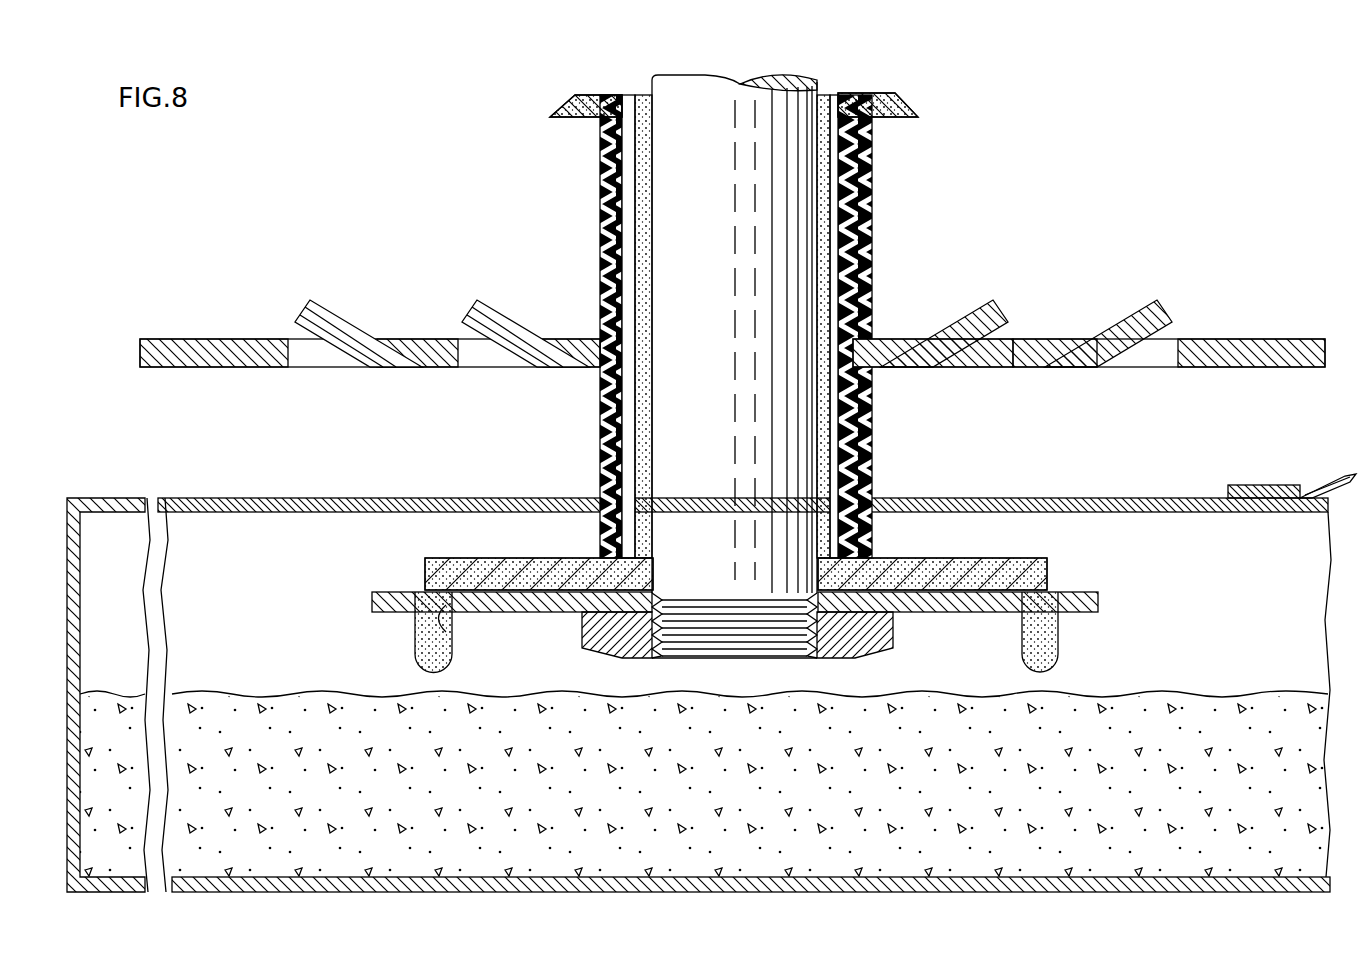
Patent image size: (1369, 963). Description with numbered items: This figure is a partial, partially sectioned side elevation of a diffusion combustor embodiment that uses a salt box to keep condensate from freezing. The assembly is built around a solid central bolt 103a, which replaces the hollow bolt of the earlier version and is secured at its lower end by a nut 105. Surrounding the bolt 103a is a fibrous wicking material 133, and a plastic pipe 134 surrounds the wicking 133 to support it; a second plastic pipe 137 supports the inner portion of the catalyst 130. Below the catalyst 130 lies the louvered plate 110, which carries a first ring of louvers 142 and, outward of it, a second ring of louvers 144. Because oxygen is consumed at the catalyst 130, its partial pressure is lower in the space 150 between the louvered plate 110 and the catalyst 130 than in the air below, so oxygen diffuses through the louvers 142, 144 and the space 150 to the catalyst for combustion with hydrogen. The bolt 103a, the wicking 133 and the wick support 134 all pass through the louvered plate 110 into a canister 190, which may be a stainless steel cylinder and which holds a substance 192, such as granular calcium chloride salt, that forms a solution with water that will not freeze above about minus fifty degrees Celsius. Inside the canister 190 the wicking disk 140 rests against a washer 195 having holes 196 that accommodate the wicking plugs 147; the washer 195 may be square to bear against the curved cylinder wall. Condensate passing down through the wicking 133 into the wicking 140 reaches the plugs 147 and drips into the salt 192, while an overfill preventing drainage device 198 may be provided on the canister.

The solid central bolt 103a is at (708, 87).
The wicking material 133 is at (833, 96).
The plastic pipe 134 is at (842, 94).
The catalyst 130 is at (884, 103).
The plastic pipe 137 is at (869, 206).
The space 150 is at (586, 247).
The first ring of louvers 142 is at (992, 302).
The second ring of louvers 144 is at (1155, 302).
The louvered plate 110 is at (1265, 336).
The overfill preventing drainage device 198 is at (73, 522).
The canister 190 is at (272, 552).
The wicking disk 140 is at (1047, 562).
The washer 195 is at (1098, 598).
The wicking plugs 147 is at (425, 660).
The holes 196 is at (445, 618).
The nut 105 is at (850, 643).
The substance 192 is at (742, 805).